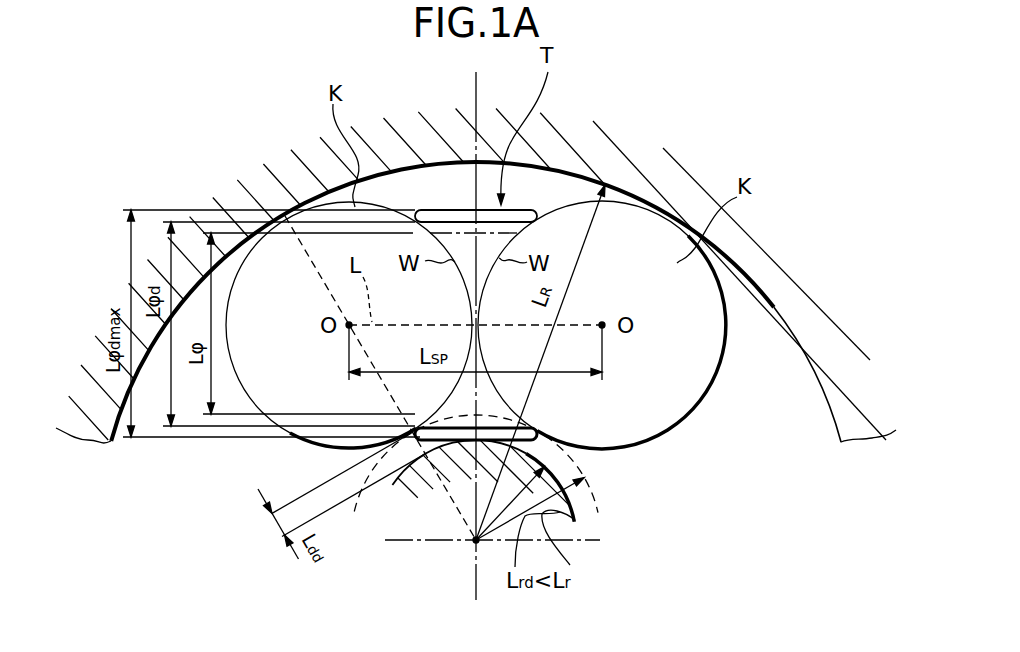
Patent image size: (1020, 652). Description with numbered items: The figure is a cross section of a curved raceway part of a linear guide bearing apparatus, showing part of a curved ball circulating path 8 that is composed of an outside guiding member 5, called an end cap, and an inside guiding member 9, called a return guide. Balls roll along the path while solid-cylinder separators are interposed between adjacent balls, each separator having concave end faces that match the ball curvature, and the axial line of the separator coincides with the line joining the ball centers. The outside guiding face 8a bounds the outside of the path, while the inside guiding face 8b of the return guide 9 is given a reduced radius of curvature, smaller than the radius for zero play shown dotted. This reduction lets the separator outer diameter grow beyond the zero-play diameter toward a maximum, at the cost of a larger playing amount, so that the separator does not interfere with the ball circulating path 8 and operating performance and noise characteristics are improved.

The outside guiding member 5 is at (793, 327).
The curved ball circulating path 8 is at (729, 466).
The outside guiding face 8a is at (818, 387).
The inside guiding face 8b is at (556, 467).
The inside guiding member 9 is at (418, 512).